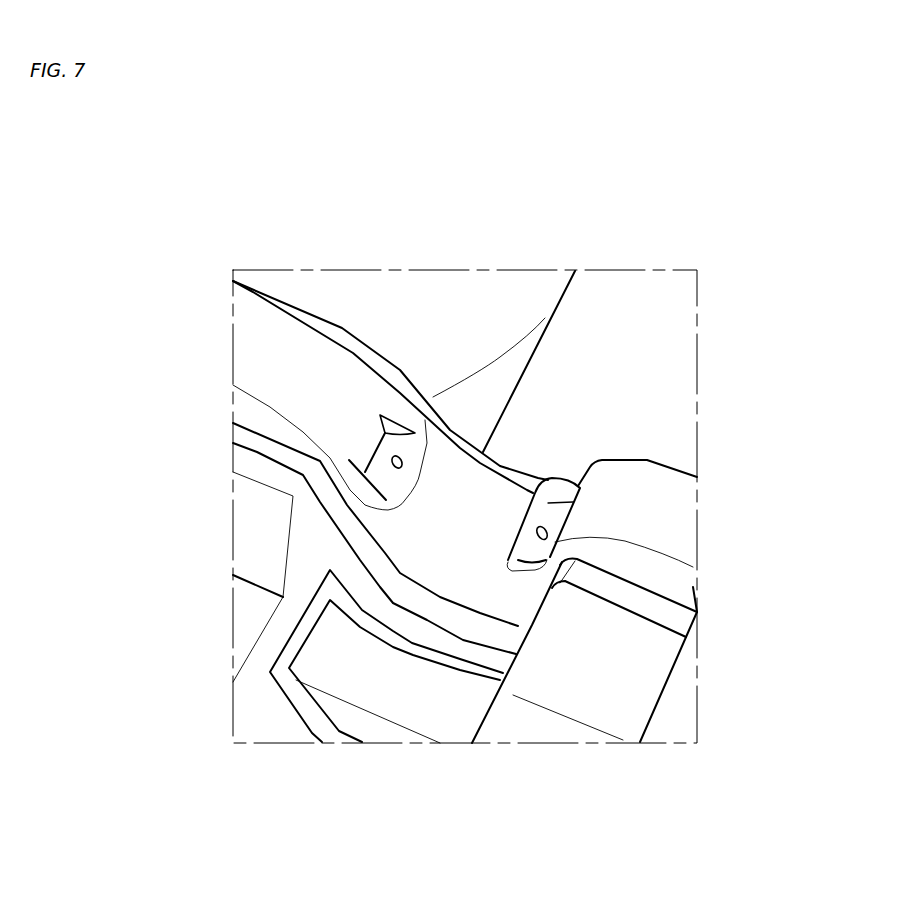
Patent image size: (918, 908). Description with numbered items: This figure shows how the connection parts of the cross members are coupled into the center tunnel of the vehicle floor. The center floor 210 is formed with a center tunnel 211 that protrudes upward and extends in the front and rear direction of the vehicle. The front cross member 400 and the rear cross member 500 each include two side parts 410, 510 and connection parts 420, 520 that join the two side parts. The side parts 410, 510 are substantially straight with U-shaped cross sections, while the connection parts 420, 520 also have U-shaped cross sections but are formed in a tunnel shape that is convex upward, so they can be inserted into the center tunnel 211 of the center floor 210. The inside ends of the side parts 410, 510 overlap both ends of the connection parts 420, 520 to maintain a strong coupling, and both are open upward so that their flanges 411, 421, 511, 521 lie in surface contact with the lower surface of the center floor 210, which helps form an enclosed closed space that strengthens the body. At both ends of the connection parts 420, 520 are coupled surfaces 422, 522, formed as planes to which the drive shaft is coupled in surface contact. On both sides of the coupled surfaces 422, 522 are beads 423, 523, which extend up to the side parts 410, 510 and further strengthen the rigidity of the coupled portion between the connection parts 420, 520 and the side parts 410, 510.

The center floor 210 is at (620, 688).
The center tunnel 211 is at (542, 430).
The front cross member 400 is at (693, 438).
The rear cross member 500 is at (688, 470).
The side part 410 is at (469, 424).
The side part 510 is at (260, 342).
The flange 411 is at (476, 389).
The flange 511 is at (367, 358).
The connection part 420 is at (360, 437).
The connection part 520 is at (443, 500).
The flange 421 is at (483, 498).
The flange 521 is at (498, 467).
The coupled surface 422 is at (392, 354).
The coupled surface 522 is at (368, 460).
The bead 423 is at (411, 492).
The bead 523 is at (400, 417).